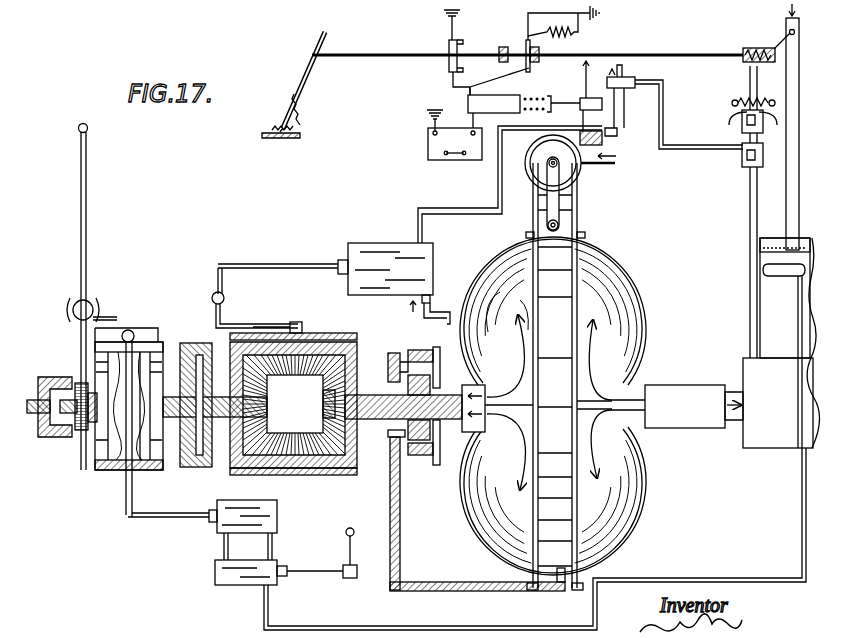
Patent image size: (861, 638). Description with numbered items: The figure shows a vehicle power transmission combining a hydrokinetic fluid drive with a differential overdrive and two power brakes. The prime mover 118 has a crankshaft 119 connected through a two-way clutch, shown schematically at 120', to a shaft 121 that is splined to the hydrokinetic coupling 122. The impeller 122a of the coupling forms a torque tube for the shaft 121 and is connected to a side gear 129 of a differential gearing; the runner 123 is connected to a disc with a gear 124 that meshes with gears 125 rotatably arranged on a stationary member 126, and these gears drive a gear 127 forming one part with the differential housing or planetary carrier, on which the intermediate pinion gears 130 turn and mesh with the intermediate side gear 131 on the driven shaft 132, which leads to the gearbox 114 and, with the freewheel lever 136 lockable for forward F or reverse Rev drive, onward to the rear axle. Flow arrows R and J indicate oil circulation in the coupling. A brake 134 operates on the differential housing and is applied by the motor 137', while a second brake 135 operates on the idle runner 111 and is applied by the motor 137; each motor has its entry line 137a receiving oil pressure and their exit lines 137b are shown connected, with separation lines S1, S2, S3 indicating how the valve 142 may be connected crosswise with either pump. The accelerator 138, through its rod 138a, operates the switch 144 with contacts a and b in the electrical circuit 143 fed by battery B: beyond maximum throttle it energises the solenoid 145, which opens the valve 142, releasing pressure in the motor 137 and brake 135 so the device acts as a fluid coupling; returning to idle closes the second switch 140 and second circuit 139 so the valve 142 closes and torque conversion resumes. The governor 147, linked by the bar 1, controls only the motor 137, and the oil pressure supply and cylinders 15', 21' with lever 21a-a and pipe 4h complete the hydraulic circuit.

The accelerator 138 is at (306, 76).
The lever rod 138a is at (388, 52).
The second circuit 139 is at (450, 24).
The second switch 140 is at (458, 47).
The switch contact a is at (499, 51).
The switch contact b is at (540, 51).
The switch 144 is at (527, 40).
The electrical circuit 143 is at (600, 13).
The solenoid 145 is at (500, 95).
The battery B is at (454, 135).
The separation line S1 is at (595, 94).
The separation line S2 is at (580, 130).
The separation line S3 is at (615, 134).
The valve 142 is at (633, 81).
The exit line 137b is at (489, 205).
The bar 1 is at (786, 68).
The governor 147 is at (742, 125).
The prime mover 118 is at (790, 343).
The crankshaft 119 is at (746, 407).
The pipe 4h is at (802, 499).
The motor 137 is at (574, 185).
The brake 135 is at (580, 228).
The entry line 137a is at (520, 238).
The motor 137' is at (345, 287).
The hydrokinetic coupling 122 is at (647, 303).
The impeller 122a is at (561, 401).
The runner R is at (484, 300).
The jet J is at (609, 298).
The runner 123 is at (462, 356).
The idle runner 111 is at (555, 411).
The gear 124 is at (463, 385).
The shaft 121 is at (456, 425).
The gear 127 is at (390, 397).
The gears 125 is at (395, 352).
The stationary member 126 is at (399, 494).
The intermediate pinion gears 130 is at (330, 346).
The intermediate side gear 131 is at (264, 403).
The side gear 129 is at (324, 413).
The brake 134 is at (300, 333).
The plate 120' is at (188, 391).
The gearbox 114 is at (104, 470).
The driven shaft 132 is at (162, 470).
The lever 136 is at (72, 374).
The forward F is at (46, 436).
The reverse Rev is at (88, 430).
The cylinder 15' is at (221, 530).
The cylinder 21' is at (279, 578).
The lever 21a-a is at (350, 578).